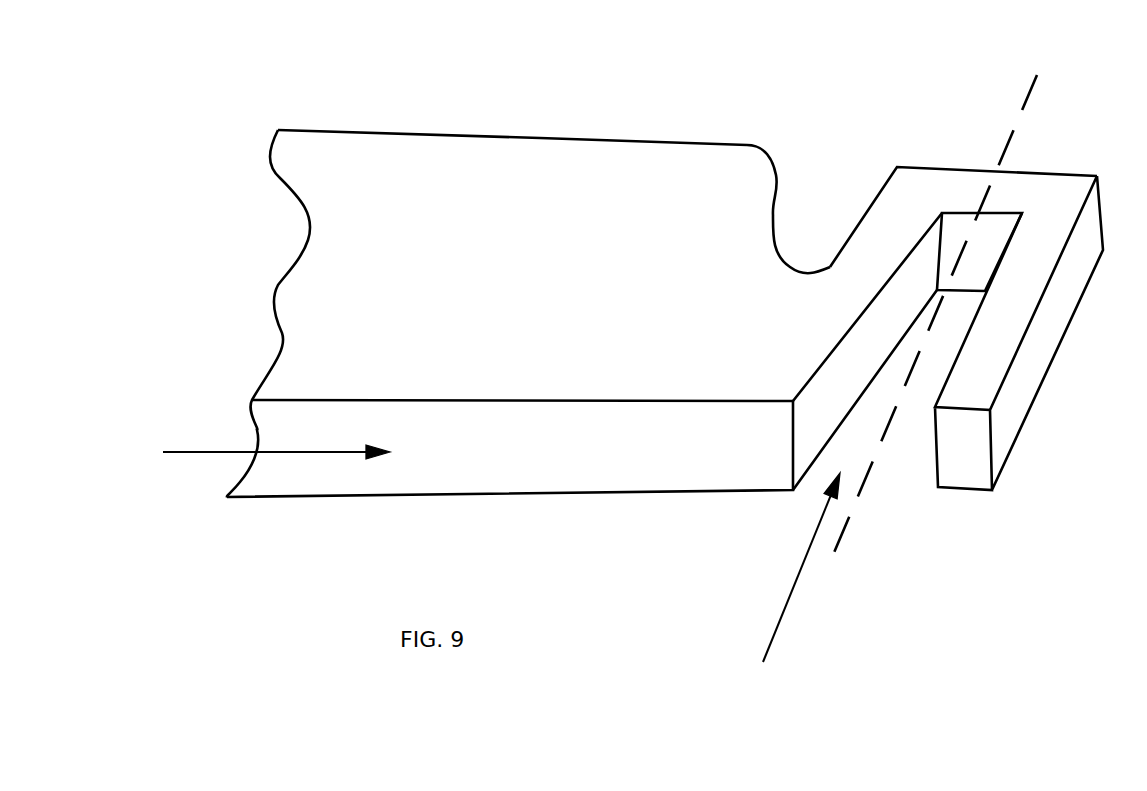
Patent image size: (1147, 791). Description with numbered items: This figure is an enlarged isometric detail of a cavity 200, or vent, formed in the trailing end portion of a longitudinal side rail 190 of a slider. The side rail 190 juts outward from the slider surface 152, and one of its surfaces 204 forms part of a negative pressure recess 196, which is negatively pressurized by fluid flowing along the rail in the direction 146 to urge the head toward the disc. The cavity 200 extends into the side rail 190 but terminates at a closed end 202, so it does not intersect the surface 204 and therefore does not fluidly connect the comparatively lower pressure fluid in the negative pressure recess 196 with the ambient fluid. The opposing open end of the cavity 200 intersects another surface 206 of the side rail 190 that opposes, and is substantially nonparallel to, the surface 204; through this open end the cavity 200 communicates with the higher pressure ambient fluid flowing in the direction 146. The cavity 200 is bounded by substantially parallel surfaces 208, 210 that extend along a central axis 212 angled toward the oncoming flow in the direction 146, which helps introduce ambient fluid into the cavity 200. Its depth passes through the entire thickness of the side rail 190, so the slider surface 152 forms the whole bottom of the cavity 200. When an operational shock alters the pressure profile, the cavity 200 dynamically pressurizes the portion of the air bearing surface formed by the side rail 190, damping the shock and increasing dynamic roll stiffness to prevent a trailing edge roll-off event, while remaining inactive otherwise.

The longitudinal side rail 190 is at (373, 158).
The negative pressure recess 196 is at (516, 70).
The surface of the side rail 204 is at (867, 207).
The closed end 202 is at (962, 217).
The surface of the cavity 208 is at (840, 370).
The surface of the cavity 210 is at (955, 357).
The opposing surface of the side rail 206 is at (747, 462).
The direction of fluid flow 146 is at (196, 453).
The slider surface 152 is at (905, 440).
The central axis 212 is at (822, 580).
The cavity 200 is at (792, 583).